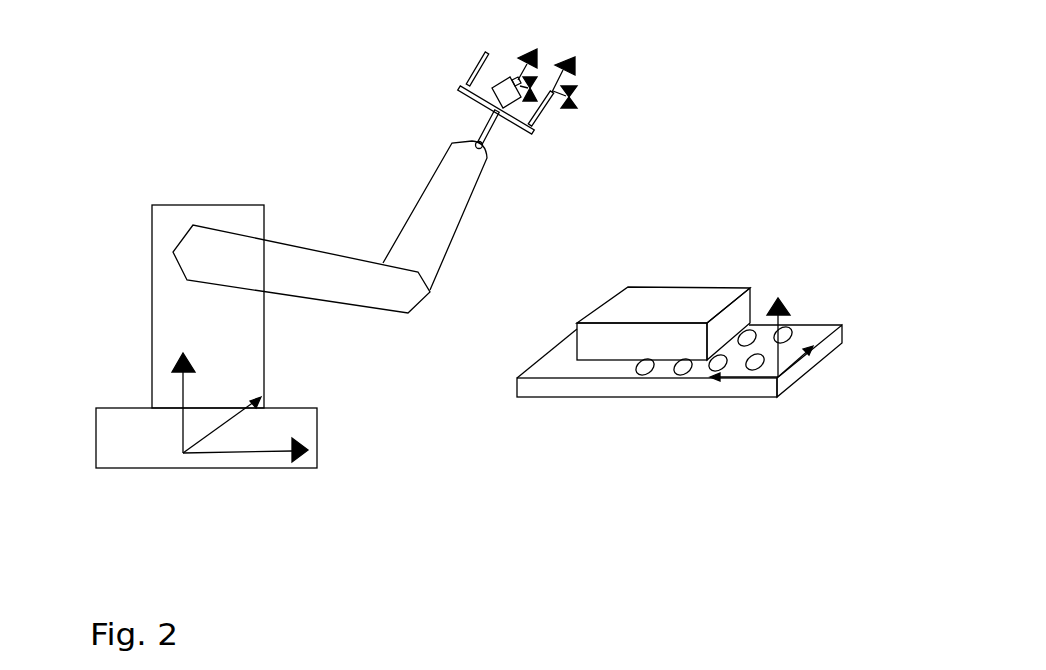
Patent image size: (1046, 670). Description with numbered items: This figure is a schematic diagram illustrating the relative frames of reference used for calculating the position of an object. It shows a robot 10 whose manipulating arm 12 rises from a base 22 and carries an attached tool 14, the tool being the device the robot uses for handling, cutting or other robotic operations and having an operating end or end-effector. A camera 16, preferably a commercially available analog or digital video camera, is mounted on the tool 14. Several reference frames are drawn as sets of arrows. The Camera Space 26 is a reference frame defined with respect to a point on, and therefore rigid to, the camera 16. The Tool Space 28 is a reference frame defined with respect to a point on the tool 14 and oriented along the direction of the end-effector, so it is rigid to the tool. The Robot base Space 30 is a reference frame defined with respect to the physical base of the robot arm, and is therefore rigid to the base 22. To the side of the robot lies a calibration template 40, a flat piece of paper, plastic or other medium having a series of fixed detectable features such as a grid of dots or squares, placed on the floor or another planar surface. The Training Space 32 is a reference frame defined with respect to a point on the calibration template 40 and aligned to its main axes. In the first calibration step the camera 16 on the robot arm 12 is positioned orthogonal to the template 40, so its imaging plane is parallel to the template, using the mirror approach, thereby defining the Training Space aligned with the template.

The robot 10 is at (149, 306).
The manipulating arm 12 is at (330, 224).
The tool 14 is at (543, 140).
The camera 16 is at (454, 60).
The base 22 is at (182, 466).
The Camera Space 26 is at (547, 63).
The Tool Space 28 is at (626, 82).
The Robot base Space 30 is at (295, 425).
The Training Space 32 is at (775, 367).
The calibration template 40 is at (648, 342).